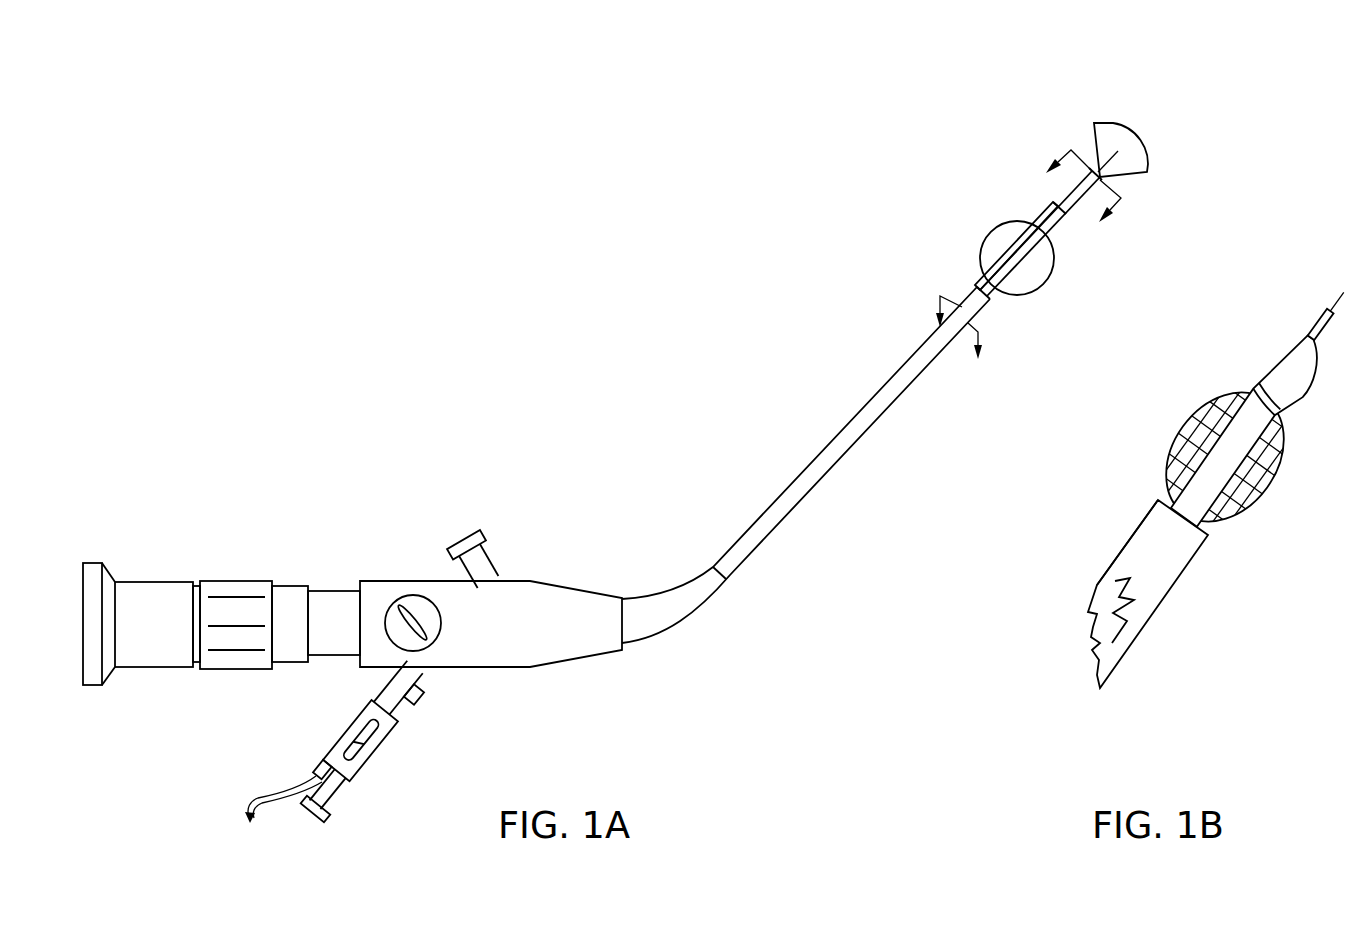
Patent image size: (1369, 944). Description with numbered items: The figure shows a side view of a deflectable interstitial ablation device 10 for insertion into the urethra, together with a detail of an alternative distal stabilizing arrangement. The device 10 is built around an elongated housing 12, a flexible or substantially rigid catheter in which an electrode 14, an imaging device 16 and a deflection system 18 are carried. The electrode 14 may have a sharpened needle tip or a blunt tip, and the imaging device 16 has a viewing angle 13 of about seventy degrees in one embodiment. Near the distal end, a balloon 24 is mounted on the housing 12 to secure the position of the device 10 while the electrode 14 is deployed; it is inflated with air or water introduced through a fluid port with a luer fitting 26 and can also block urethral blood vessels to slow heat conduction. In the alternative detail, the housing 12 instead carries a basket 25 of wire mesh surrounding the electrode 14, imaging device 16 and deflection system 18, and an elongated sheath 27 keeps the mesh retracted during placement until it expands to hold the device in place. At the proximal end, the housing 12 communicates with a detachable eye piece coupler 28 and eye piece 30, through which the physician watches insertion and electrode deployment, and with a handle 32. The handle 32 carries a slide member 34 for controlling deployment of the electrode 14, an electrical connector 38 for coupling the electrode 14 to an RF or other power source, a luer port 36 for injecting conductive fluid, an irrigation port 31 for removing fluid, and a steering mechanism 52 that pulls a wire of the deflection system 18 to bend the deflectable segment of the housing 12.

In FIG. 1A, the deflectable interstitial ablation device 10 is at (853, 305).
In FIG. 1A, the elongated housing 12 is at (804, 471).
In FIG. 1B, the elongated housing 12 is at (1163, 578).
In FIG. 1A, the viewing angle 13 is at (1136, 140).
In FIG. 1A, the electrode 14 is at (1113, 158).
In FIG. 1B, the electrode 14 is at (1340, 291).
In FIG. 1A, the imaging device 16 is at (1090, 168).
In FIG. 1B, the imaging device 16 is at (1313, 330).
In FIG. 1A, the deflection system 18 is at (1075, 212).
In FIG. 1B, the deflection system 18 is at (1298, 388).
In FIG. 1A, the balloon 24 is at (999, 232).
In FIG. 1B, the basket 25 is at (1183, 432).
In FIG. 1A, the luer fitting 26 is at (480, 560).
In FIG. 1B, the elongated sheath 27 is at (1131, 539).
In FIG. 1A, the eye piece coupler 28 is at (242, 580).
In FIG. 1A, the eye piece 30 is at (150, 580).
In FIG. 1A, the irrigation port 31 is at (417, 698).
In FIG. 1A, the handle 32 is at (377, 668).
In FIG. 1A, the slide member 34 is at (345, 760).
In FIG. 1A, the luer port 36 is at (318, 822).
In FIG. 1A, the electrical connector 38 is at (318, 772).
In FIG. 1A, the steering mechanism 52 is at (410, 606).